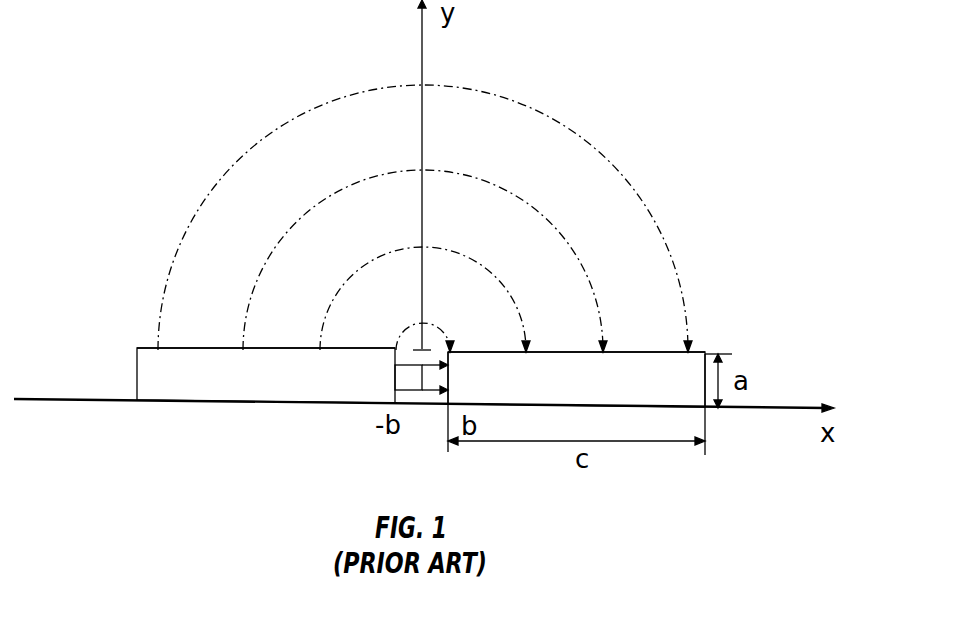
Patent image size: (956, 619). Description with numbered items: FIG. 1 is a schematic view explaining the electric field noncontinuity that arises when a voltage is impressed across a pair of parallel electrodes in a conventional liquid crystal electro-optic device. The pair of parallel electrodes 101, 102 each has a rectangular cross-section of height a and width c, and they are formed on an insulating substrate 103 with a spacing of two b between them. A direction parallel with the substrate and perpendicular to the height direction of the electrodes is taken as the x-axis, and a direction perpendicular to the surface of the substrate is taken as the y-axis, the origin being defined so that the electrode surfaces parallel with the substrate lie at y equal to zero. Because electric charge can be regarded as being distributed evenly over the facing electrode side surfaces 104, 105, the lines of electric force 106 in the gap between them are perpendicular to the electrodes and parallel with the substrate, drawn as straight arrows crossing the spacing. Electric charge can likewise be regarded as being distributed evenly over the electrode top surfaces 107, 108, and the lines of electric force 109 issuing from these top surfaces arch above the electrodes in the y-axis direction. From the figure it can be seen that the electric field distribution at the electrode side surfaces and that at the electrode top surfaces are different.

The parallel electrode 101 is at (293, 387).
The parallel electrode 102 is at (595, 389).
The insulating substrate 103 is at (420, 381).
The electrode surface 104 is at (367, 402).
The electrode surface 105 is at (477, 378).
The lines of electric force 106 is at (452, 427).
The electrode surface 107 is at (266, 324).
The electrode surface 108 is at (576, 330).
The lines of electric force 109 is at (425, 218).